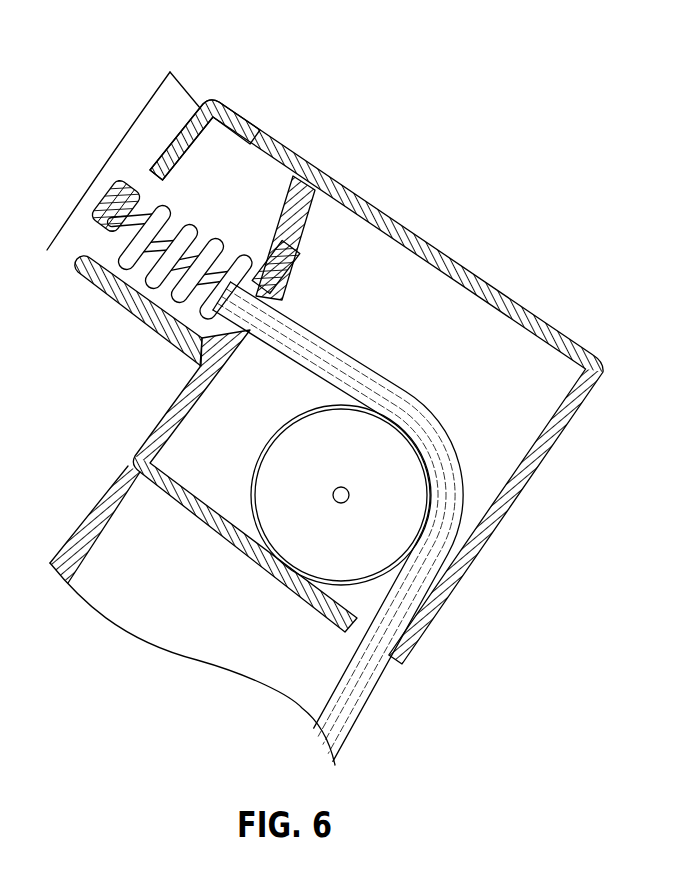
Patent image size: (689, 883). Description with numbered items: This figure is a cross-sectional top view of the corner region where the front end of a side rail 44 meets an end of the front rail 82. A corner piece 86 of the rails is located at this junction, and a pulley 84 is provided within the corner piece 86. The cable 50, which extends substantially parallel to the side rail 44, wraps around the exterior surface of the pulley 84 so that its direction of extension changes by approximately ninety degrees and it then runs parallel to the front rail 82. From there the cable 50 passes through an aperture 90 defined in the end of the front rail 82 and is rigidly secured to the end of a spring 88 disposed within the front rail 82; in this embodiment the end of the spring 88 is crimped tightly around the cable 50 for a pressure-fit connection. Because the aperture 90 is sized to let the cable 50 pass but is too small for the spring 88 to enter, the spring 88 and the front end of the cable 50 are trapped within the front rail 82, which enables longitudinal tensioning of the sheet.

The side rail 44 is at (118, 552).
The cable 50 is at (337, 686).
The front rail 82 is at (227, 237).
The pulley 84 is at (253, 478).
The corner piece 86 is at (557, 333).
The spring 88 is at (253, 127).
The aperture 90 is at (275, 273).